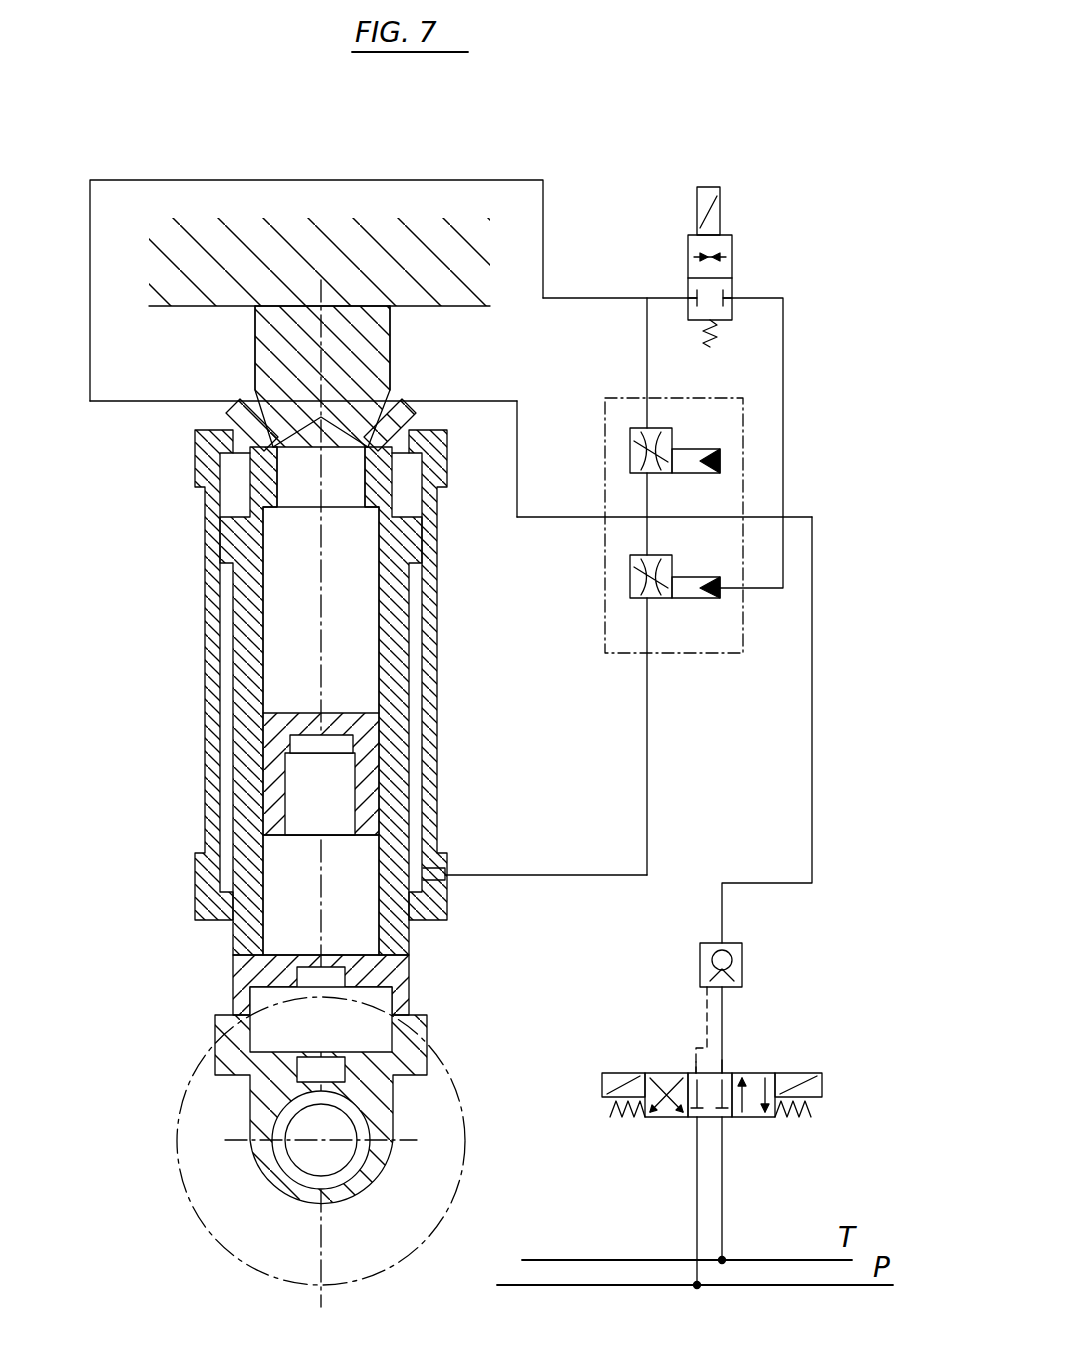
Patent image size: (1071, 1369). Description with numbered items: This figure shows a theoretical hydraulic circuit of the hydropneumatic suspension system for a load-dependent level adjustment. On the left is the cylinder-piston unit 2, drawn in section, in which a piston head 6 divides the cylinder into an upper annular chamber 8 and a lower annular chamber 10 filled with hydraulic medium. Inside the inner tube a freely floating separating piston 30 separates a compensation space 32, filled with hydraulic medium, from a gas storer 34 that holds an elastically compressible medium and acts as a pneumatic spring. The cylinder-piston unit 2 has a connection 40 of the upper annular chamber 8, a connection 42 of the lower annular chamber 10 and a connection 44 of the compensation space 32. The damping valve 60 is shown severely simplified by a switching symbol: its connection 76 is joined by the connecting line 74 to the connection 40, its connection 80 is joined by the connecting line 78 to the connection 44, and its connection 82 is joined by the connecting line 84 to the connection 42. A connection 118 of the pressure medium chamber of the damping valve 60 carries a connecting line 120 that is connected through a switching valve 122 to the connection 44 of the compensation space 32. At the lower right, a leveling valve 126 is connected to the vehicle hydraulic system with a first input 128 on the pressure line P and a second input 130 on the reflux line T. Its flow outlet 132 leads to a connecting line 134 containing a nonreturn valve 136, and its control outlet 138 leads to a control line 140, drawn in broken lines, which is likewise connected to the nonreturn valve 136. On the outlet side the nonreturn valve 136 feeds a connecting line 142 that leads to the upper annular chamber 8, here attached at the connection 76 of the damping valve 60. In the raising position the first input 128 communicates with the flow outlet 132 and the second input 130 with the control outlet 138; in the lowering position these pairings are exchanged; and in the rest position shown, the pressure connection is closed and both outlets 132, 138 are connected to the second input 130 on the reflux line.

The cylinder-piston unit 2 is at (193, 668).
The piston head 6 is at (405, 551).
The upper annular chamber 8 is at (402, 503).
The lower annular chamber 10 is at (412, 783).
The separating piston 30 is at (308, 813).
The compensation space 32 is at (297, 603).
The gas storer 34 is at (308, 930).
The connection of the upper annular chamber 40 is at (397, 397).
The connection of the lower annular chamber 42 is at (447, 873).
The connection of the compensation space 44 is at (245, 397).
The damping valve 60 is at (605, 592).
The connecting line 74 is at (517, 428).
The connection of the first valve chamber 76 is at (645, 515).
The connecting line 78 is at (567, 298).
The connection of the second valve chamber 80 is at (647, 398).
The connection of the fourth valve chamber 82 is at (647, 653).
The connecting line 84 is at (598, 875).
The connection of the pressure medium chamber 118 is at (720, 461).
The connecting line 120 is at (783, 341).
The switching valve 122 is at (675, 270).
The leveling valve 126 is at (790, 1070).
The first input 128 is at (693, 1120).
The second input 130 is at (725, 1120).
The flow outlet 132 is at (730, 1068).
The connecting line 134 is at (723, 1035).
The nonreturn valve 136 is at (742, 965).
The control outlet 138 is at (697, 1073).
The control line 140 is at (705, 1005).
The connecting line 142 is at (812, 740).